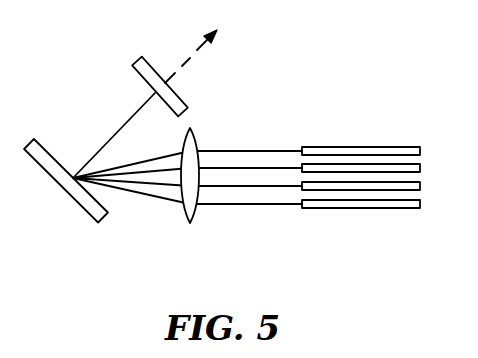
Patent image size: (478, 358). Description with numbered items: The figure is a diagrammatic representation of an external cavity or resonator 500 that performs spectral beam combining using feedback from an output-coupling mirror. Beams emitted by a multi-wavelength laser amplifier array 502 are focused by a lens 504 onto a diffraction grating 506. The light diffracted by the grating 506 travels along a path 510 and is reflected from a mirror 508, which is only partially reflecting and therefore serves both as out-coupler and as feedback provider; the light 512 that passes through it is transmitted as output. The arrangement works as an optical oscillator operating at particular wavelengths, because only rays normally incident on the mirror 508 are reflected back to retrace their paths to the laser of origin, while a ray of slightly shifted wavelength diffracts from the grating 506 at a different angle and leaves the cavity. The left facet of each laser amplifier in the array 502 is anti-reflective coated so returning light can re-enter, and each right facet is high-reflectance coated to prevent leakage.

The external cavity or resonator 500 is at (302, 294).
The multi-wavelength laser amplifier array 502 is at (353, 146).
The lens 504 is at (188, 222).
The diffraction grating 506 is at (84, 220).
The mirror 508 is at (152, 64).
The path 510 is at (118, 128).
The light 512 is at (183, 63).